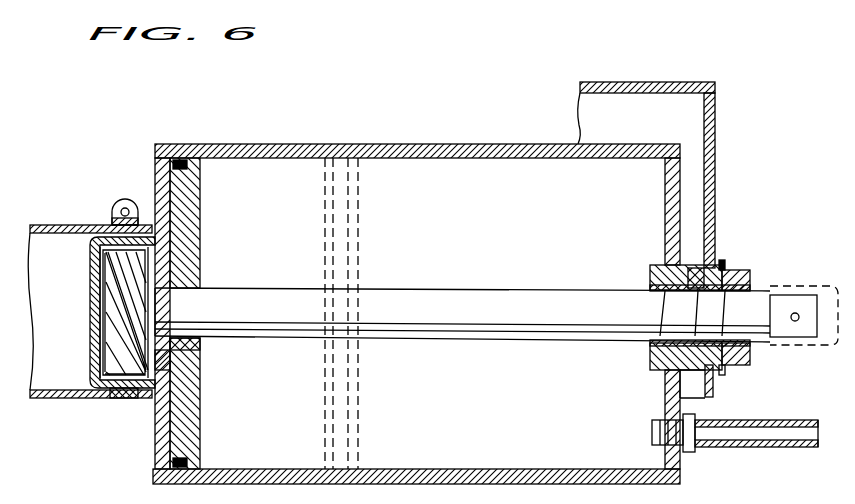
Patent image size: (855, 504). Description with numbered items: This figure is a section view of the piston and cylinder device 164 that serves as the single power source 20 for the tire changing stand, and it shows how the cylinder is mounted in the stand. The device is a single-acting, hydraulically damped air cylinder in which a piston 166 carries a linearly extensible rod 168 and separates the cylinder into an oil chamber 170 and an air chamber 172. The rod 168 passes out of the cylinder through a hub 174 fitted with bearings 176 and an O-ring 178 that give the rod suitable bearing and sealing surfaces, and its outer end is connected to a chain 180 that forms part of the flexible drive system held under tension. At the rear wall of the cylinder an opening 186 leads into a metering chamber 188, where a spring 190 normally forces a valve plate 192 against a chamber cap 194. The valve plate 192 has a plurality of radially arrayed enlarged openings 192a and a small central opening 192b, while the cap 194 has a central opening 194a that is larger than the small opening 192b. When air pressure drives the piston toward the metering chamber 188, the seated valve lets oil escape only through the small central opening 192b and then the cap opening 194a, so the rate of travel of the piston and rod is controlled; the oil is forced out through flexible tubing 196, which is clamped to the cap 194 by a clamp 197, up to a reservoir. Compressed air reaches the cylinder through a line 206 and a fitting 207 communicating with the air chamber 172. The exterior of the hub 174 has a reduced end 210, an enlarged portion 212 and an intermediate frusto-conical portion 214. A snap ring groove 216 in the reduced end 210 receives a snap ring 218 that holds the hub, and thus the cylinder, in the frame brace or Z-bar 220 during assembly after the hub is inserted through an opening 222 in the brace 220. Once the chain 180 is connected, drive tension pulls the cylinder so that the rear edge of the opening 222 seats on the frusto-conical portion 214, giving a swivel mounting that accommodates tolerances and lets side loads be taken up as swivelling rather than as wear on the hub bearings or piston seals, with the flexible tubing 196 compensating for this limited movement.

The power source 20 is at (366, 108).
The piston and cylinder device 164 is at (475, 143).
The piston 166 is at (325, 231).
The rod 168 is at (535, 275).
The oil chamber 170 is at (295, 200).
The air chamber 172 is at (535, 209).
The hub 174 is at (650, 272).
The bearings 176 is at (665, 291).
The O-ring 178 is at (698, 291).
The chain 180 is at (832, 290).
The opening 186 is at (200, 263).
The metering chamber 188 is at (180, 385).
The spring 190 is at (185, 352).
The valve plate 192 is at (106, 398).
The enlarged openings 192a is at (100, 265).
The small central opening 192b is at (105, 312).
The chamber cap 194 is at (104, 378).
The central opening 194a is at (103, 292).
The flexible tubing 196 is at (68, 225).
The clamp 197 is at (126, 200).
The line 206 is at (790, 447).
The fitting 207 is at (688, 452).
The reduced end 210 is at (746, 270).
The enlarged portion 212 is at (656, 265).
The frusto-conical portion 214 is at (722, 265).
The snap ring groove 216 is at (722, 372).
The snap ring 218 is at (722, 385).
The frame brace 220 is at (716, 162).
The opening 222 is at (700, 268).